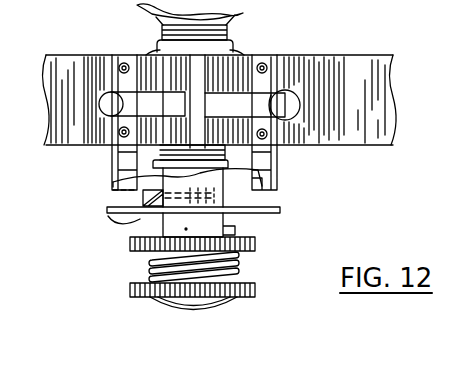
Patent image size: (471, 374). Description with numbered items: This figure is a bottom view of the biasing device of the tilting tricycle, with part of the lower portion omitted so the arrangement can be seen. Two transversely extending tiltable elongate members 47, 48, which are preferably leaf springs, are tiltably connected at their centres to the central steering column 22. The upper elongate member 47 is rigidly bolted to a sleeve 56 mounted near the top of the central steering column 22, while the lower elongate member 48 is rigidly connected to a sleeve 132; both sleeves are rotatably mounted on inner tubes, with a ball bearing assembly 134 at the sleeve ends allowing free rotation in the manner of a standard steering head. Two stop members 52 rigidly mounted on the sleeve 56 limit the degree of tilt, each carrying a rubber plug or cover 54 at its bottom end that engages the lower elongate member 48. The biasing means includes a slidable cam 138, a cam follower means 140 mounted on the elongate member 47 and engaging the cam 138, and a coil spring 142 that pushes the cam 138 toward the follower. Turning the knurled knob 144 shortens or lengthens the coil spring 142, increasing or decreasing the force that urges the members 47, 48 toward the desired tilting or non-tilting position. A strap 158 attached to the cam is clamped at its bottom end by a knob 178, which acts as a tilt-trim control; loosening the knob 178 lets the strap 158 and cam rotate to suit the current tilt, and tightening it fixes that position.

The central steering column 22 is at (140, 15).
The tiltable elongate member 47 is at (95, 72).
The tiltable elongate member 48 is at (63, 68).
The stop member 52 is at (252, 100).
The rubber plug or cover 54 is at (288, 108).
The sleeve 56 is at (160, 48).
The sleeve 132 is at (147, 202).
The ball bearing assembly 134 is at (222, 48).
The slidable cam 138 is at (262, 192).
The cam follower means 140 is at (125, 172).
The coil spring 142 is at (236, 262).
The knurled knob 144 is at (130, 289).
The strap 158 is at (127, 220).
The knob 178 is at (130, 244).